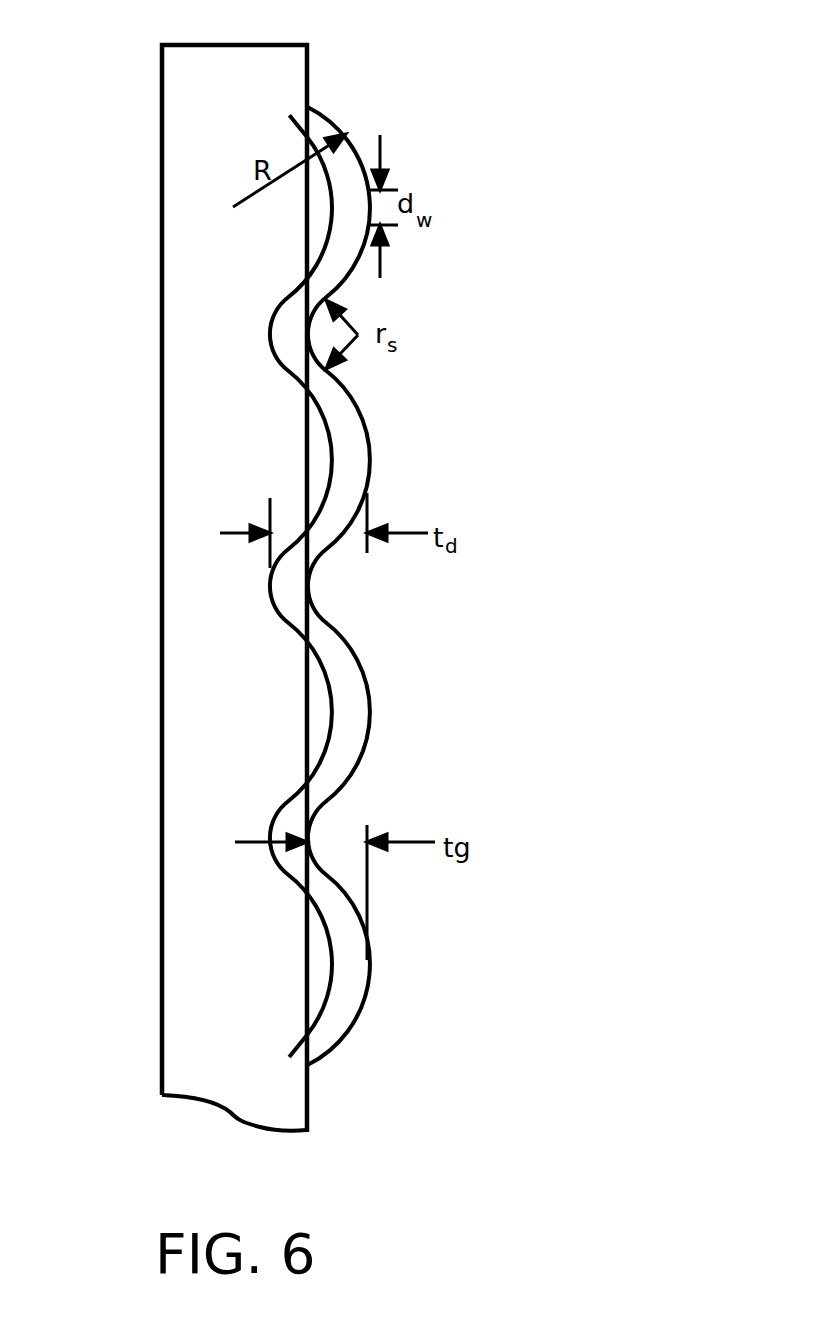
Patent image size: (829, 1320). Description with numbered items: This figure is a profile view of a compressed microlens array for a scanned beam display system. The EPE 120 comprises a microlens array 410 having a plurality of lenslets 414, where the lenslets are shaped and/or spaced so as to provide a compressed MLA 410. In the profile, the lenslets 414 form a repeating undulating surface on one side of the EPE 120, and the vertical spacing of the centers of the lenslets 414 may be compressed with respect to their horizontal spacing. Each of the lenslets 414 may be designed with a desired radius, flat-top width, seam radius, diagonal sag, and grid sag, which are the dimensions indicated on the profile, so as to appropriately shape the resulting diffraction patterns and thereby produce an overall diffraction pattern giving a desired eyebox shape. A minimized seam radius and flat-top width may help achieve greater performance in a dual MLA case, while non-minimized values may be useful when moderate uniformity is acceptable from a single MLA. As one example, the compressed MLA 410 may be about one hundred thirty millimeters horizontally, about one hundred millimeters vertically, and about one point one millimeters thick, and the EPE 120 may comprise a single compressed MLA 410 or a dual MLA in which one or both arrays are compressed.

The EPE 120 is at (308, 63).
The compressed microlens array 410 is at (363, 560).
The lenslets 414 is at (364, 1003).